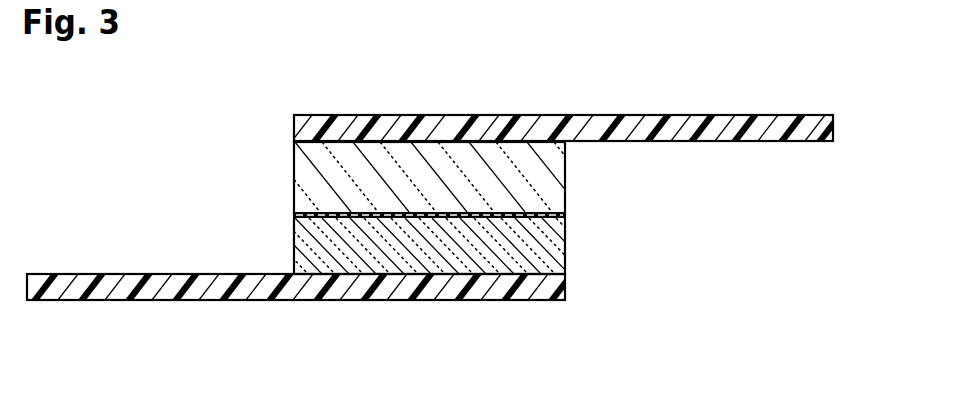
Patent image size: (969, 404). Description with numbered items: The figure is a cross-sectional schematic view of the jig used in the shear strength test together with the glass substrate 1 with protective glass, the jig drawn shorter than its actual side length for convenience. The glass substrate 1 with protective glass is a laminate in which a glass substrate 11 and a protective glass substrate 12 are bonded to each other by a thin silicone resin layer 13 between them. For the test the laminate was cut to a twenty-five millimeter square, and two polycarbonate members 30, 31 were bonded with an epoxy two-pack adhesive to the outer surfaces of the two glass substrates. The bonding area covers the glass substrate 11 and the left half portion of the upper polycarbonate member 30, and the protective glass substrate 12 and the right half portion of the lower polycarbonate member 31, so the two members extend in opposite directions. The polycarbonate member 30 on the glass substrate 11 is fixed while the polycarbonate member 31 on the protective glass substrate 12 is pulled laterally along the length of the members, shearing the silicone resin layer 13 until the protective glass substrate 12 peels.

The glass substrate with protective glass 1 is at (448, 208).
The glass substrate 11 is at (565, 157).
The protective glass substrate 12 is at (432, 246).
The silicone resin layer 13 is at (565, 214).
The polycarbonate member 30 is at (489, 125).
The polycarbonate member 31 is at (496, 276).